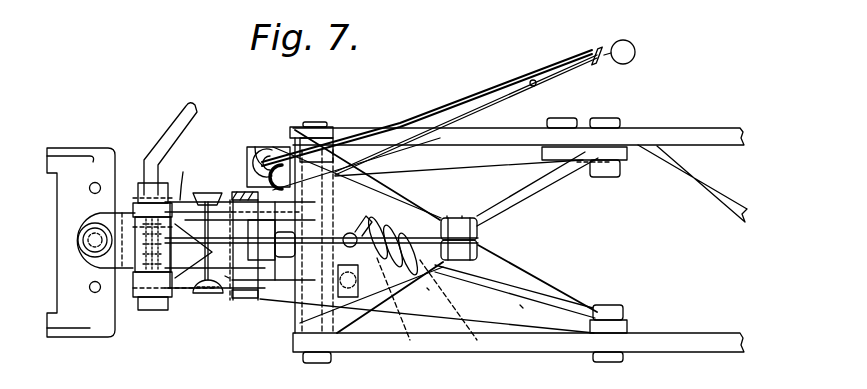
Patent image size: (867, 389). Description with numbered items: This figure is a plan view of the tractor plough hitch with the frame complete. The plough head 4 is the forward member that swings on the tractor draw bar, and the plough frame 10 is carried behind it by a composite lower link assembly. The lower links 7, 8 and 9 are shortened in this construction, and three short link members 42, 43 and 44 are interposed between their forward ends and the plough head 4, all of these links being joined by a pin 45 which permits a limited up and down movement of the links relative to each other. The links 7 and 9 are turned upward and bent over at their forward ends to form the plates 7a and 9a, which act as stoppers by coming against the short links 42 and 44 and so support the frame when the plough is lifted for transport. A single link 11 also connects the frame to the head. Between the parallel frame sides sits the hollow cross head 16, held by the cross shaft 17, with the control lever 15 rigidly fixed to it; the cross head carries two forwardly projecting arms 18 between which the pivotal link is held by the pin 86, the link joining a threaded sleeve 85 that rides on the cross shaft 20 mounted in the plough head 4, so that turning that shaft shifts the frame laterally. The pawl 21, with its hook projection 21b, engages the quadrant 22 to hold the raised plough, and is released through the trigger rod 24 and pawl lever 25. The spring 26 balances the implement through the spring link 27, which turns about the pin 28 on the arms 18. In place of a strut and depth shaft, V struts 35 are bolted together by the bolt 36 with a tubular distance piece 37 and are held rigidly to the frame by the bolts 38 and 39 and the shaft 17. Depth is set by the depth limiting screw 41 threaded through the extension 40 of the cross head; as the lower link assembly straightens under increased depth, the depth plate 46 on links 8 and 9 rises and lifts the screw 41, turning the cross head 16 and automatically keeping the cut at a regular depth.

The plough head 4 is at (117, 193).
The lower link 7 is at (520, 163).
The extension plate 7a is at (257, 145).
The lower link 8 is at (519, 303).
The lower link 9 is at (558, 292).
The extension plate 9a is at (215, 295).
The plough frame 10 is at (726, 347).
The single link 11 is at (441, 288).
The control lever 15 is at (577, 60).
The cross head 16 is at (293, 327).
The cross shaft 17 is at (319, 357).
The forwardly projecting arms 18 is at (360, 220).
The cross shaft 20 is at (148, 190).
The pawl 21 is at (350, 108).
The hook projection 21b is at (350, 102).
The toothed sector or quadrant 22 is at (360, 124).
The trigger rod 24 is at (531, 80).
The pawl lever 25 is at (599, 50).
The spring 26 is at (445, 262).
The spring link 27 is at (388, 205).
The pin 28 is at (268, 142).
The V struts 35 is at (566, 172).
The bolt 36 is at (462, 216).
The tubular distance piece 37 is at (447, 216).
The bolt 38 is at (606, 356).
The bolt 39 is at (610, 120).
The extension 40 is at (390, 292).
The depth limiting screw 41 is at (355, 292).
The short link member 42 is at (192, 197).
The short link member 43 is at (256, 160).
The short link member 44 is at (202, 292).
The pin 45 is at (253, 298).
The depth plate 46 is at (428, 290).
The sleeve 85 is at (145, 303).
The pin 86 is at (227, 278).